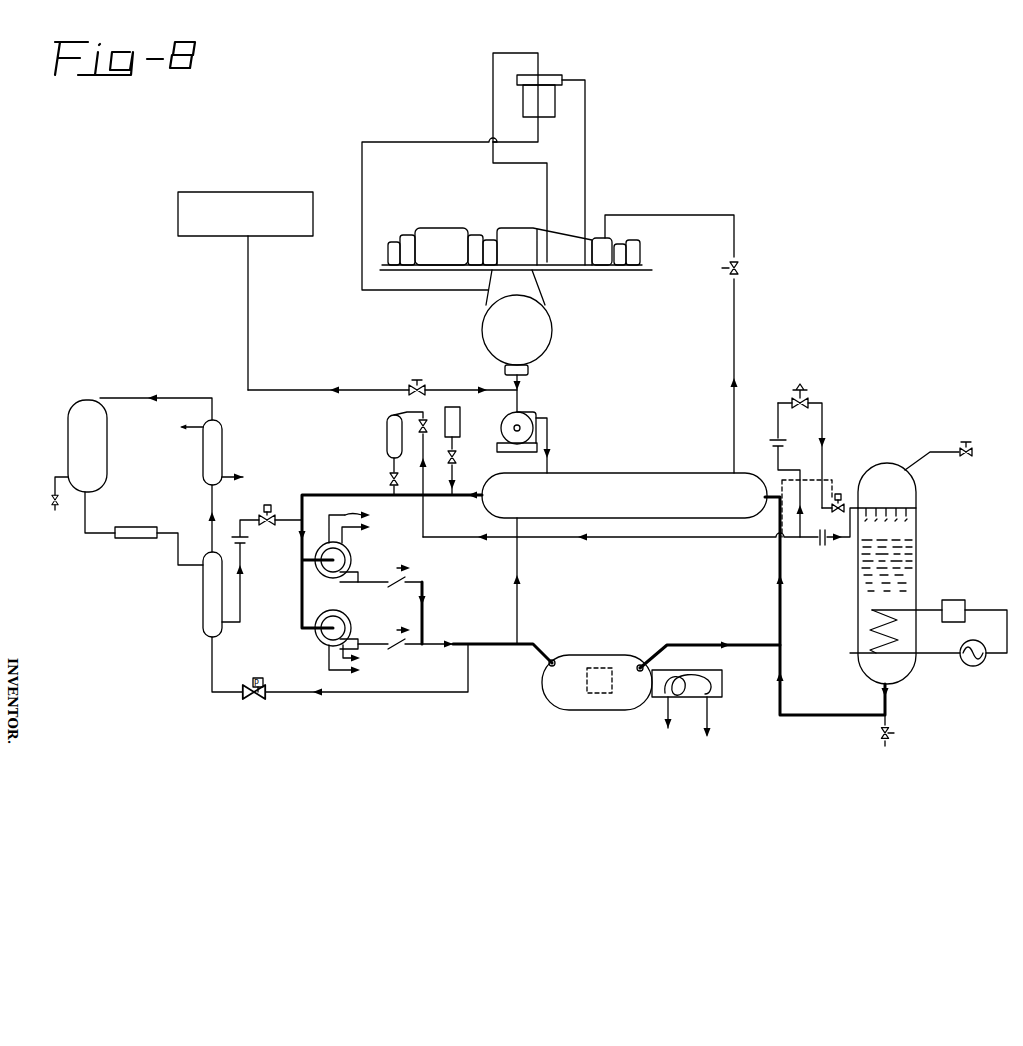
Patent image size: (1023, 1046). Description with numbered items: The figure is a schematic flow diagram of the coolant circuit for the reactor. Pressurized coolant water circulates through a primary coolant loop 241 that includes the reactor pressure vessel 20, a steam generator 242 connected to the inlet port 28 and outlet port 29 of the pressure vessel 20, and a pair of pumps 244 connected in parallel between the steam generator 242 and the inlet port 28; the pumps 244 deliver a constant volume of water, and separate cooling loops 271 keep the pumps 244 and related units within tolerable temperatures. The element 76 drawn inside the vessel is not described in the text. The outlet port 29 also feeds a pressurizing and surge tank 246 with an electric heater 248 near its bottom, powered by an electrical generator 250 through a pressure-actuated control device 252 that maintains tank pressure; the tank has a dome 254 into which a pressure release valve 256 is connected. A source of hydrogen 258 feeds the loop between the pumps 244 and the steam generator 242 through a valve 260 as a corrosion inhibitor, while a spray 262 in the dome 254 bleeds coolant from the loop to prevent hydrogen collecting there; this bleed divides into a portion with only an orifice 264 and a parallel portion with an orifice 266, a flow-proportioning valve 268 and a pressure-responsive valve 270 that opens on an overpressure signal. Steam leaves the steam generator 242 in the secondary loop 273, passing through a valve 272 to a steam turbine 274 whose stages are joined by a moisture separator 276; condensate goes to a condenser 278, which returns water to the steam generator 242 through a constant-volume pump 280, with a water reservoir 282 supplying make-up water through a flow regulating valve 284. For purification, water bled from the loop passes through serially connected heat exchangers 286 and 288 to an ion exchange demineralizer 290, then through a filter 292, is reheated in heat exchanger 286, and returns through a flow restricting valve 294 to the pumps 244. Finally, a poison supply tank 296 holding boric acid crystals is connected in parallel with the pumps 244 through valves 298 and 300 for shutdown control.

The reactor pressure vessel 20 is at (612, 709).
The inlet port 28 is at (549, 664).
The outlet port 29 is at (708, 647).
The agitator 76 is at (598, 680).
The primary coolant loop 241 is at (779, 605).
The steam generator 242 is at (614, 474).
The pumps 244 is at (345, 562).
The pressurizing and surge tank 246 is at (858, 594).
The electric heater 248 is at (885, 638).
The electrical generator 250 is at (977, 664).
The pressure-actuated control device 252 is at (958, 610).
The dome 254 is at (886, 463).
The pressure release valve 256 is at (966, 452).
The source of hydrogen 258 is at (461, 425).
The valve 260 is at (458, 458).
The spray 262 is at (895, 509).
The orifice 264 is at (830, 545).
The orifice 266 is at (776, 446).
The flow-proportioning valve 268 is at (808, 400).
The pressure-responsive valve 270 is at (836, 514).
The cooling loops 271 is at (350, 512).
The valve 272 is at (741, 268).
The secondary loop 273 is at (745, 352).
The steam turbine 274 is at (438, 230).
The moisture separator 276 is at (548, 80).
The condenser 278 is at (548, 332).
The pump 280 is at (522, 420).
The water reservoir 282 is at (248, 195).
The flow regulating valve 284 is at (420, 388).
The heat exchanger 286 is at (205, 596).
The heat exchanger 288 is at (205, 445).
The ion exchange demineralizer 290 is at (97, 445).
The filter 292 is at (122, 538).
The flow restricting valve 294 is at (269, 505).
The poison supply tank 296 is at (388, 440).
The valve 298 is at (430, 418).
The valve 300 is at (390, 476).